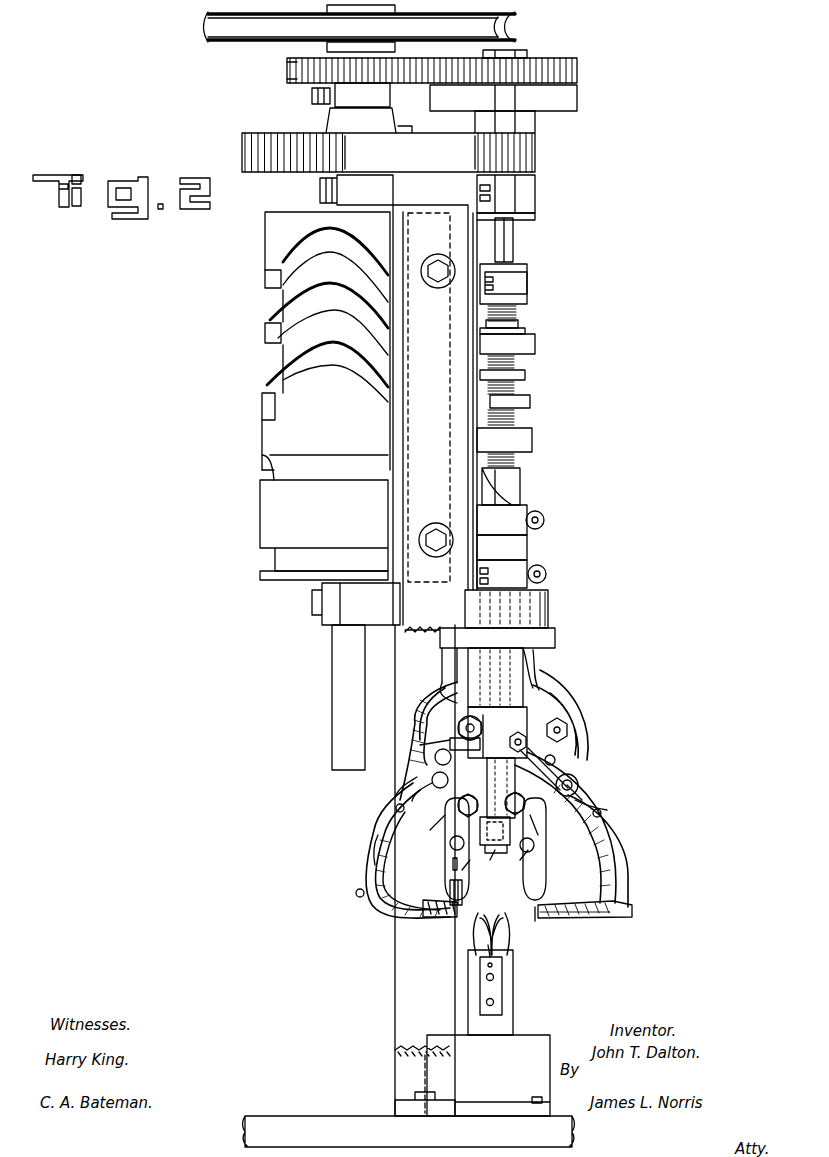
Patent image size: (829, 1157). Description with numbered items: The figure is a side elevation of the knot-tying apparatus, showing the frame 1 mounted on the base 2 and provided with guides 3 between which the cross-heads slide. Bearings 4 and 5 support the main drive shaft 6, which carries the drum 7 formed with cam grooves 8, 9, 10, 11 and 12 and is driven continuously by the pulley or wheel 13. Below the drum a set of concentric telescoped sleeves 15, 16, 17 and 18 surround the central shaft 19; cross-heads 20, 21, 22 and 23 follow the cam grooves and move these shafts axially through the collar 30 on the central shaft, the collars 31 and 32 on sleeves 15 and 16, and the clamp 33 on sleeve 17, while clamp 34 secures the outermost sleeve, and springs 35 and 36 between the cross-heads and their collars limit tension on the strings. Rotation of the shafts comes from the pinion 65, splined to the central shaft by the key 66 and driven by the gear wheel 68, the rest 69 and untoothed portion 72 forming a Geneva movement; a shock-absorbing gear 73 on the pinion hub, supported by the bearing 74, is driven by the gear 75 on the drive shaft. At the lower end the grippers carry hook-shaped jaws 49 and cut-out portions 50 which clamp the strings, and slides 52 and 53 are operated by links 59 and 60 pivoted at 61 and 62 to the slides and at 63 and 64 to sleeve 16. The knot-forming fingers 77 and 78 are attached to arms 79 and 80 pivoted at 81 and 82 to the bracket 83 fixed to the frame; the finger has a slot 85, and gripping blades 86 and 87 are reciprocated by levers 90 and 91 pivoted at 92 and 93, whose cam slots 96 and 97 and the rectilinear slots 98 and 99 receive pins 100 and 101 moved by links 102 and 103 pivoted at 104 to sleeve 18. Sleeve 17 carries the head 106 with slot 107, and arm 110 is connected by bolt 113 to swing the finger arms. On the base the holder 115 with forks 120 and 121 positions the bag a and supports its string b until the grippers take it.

The frame 1 is at (402, 987).
The base 2 is at (353, 1110).
The guides 3 is at (494, 347).
The bearing 4 is at (550, 190).
The bearing 5 is at (325, 612).
The main drive shaft 6 is at (308, 697).
The drum 7 is at (326, 341).
The cam groove 8 is at (270, 283).
The cam groove 9 is at (270, 335).
The cam groove 10 is at (277, 388).
The cam groove 11 is at (273, 478).
The cam groove 12 is at (270, 561).
The pulley or wheel 13 is at (510, 30).
The tubular shaft or sleeve 15 is at (518, 322).
The hollow shaft or sleeve 16 is at (465, 780).
The hollow shaft 17 is at (570, 688).
The outermost tubular shaft 18 is at (548, 595).
The central shaft 19 is at (517, 235).
The cross-head 20 is at (527, 282).
The cross-head 21 is at (535, 342).
The cross-head 22 is at (532, 440).
The cross-head 23 is at (520, 498).
The collar 30 is at (527, 270).
The collar 31 is at (525, 331).
The collar 32 is at (530, 402).
The clamp 33 is at (544, 520).
The clamp 34 is at (546, 572).
The spring 35 is at (514, 360).
The spring 36 is at (514, 418).
The hook-shaped jaw 49 is at (565, 885).
The cut-out portion 50 is at (450, 890).
The slide 52 is at (446, 857).
The slide 53 is at (547, 870).
The link 59 is at (431, 827).
The link 60 is at (530, 818).
The pivot 61 is at (471, 871).
The pivot 62 is at (514, 869).
The pivot 63 is at (458, 808).
The pivot 64 is at (500, 861).
The pinion 65 is at (522, 156).
The key 66 is at (525, 228).
The gear wheel 68 is at (359, 152).
The rest 69 is at (476, 158).
The untoothed portion 72 is at (424, 143).
The gear 73 is at (577, 70).
The bearing 74 is at (577, 98).
The gear 75 is at (294, 72).
The knot-forming finger 77 is at (385, 915).
The knot-forming finger 78 is at (570, 912).
The arm 79 is at (383, 862).
The arm 80 is at (612, 840).
The pivot 81 is at (455, 721).
The pivot 82 is at (567, 728).
The bracket 83 is at (442, 660).
The slot or opening 85 is at (545, 662).
The gripping blade 86 is at (357, 892).
The gripping blade 87 is at (625, 905).
The lever 90 is at (396, 810).
The lever 91 is at (605, 810).
The pivot 92 is at (375, 840).
The pivot 93 is at (601, 813).
The cam slot 96 is at (435, 760).
The cam slot 97 is at (580, 782).
The rectilinear slot 98 is at (420, 745).
The rectilinear slot 99 is at (556, 760).
The pin 100 is at (412, 791).
The pin 101 is at (590, 797).
The link 102 is at (422, 700).
The link 103 is at (580, 703).
The pivot 104 is at (455, 672).
The head 106 is at (450, 735).
The slot 107 is at (432, 780).
The arm 110 is at (556, 752).
The bolt 113 is at (555, 828).
The holder 115 is at (502, 992).
The fork 120 is at (508, 958).
The fork 121 is at (505, 925).
The bag a is at (480, 905).
The string b is at (485, 960).